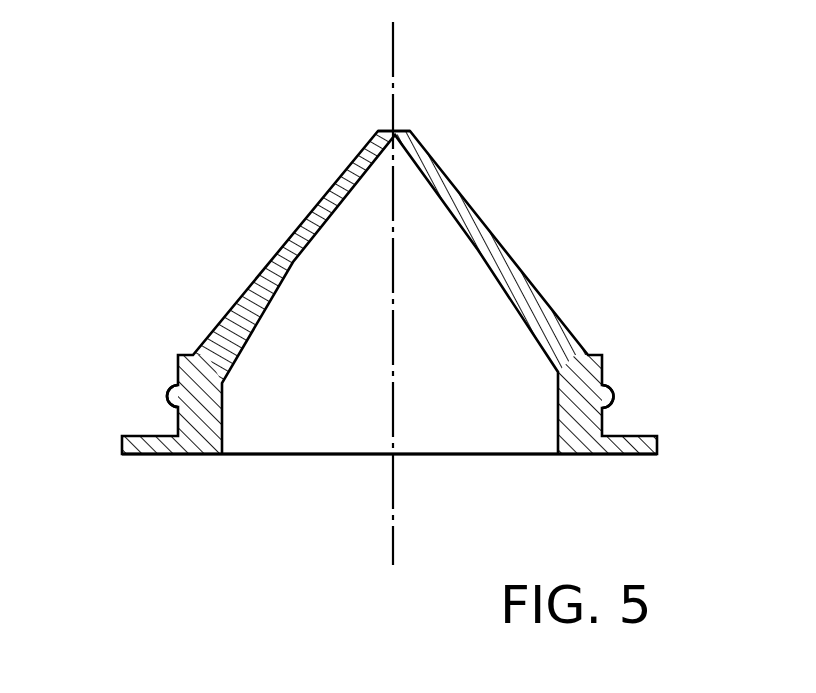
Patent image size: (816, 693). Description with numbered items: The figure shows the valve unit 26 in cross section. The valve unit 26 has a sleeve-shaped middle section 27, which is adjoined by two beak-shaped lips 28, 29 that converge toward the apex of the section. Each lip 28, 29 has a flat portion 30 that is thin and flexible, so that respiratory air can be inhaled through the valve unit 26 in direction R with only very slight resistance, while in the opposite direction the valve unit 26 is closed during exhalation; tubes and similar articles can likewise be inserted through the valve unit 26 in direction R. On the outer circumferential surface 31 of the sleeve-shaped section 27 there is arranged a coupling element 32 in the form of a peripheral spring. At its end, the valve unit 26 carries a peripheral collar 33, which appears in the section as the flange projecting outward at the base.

The valve unit 26 is at (637, 136).
The sleeve-shaped middle section 27 is at (177, 372).
The beak-shaped lip 28 is at (258, 253).
The beak-shaped lip 29 is at (498, 210).
The flat portion 30 is at (352, 160).
The outer circumferential surface 31 is at (163, 418).
The coupling element 32 is at (610, 393).
The peripheral collar 33 is at (167, 457).